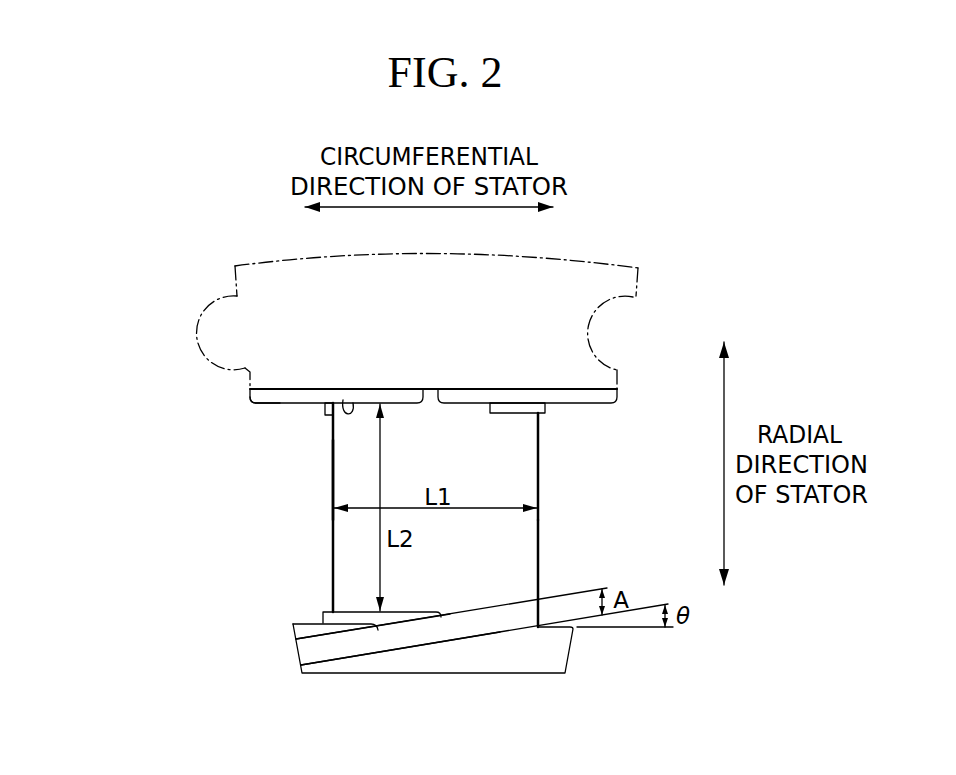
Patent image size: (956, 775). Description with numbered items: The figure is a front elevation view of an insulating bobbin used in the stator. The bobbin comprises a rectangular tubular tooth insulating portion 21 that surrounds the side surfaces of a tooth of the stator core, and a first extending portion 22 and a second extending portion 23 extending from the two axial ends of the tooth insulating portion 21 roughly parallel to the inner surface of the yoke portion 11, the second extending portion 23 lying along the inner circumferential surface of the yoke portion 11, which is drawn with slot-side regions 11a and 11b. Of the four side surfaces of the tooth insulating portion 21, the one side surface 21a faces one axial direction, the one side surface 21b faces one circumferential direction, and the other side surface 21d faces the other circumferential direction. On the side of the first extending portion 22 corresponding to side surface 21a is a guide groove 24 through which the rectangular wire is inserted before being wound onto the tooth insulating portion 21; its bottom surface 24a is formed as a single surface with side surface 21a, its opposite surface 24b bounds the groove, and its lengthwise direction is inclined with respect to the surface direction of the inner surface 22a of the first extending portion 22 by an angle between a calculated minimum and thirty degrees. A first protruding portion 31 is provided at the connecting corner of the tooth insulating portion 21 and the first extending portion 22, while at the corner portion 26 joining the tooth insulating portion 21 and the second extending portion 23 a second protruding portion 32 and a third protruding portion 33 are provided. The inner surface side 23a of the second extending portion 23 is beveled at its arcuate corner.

The yoke portion 11 is at (570, 260).
The slot of stator core 11a is at (203, 330).
The slot of stator core 11b is at (593, 320).
The tooth insulating portion 21 is at (332, 528).
The one side surface 21a is at (516, 478).
The one side surface 21b is at (540, 530).
The other side surface 21d is at (332, 483).
The first extending portion 22 is at (537, 673).
The inner surface 22a is at (307, 623).
The second extending portion 23 is at (417, 389).
The inner surface side 23a is at (270, 403).
The guide groove 24 is at (318, 648).
The bottom surface 24a is at (355, 645).
The lower surface of inclined plate 24b is at (418, 646).
The corner portion 26 is at (343, 400).
The first protruding portion 31 is at (363, 610).
The second protruding portion 32 is at (548, 408).
The third protruding portion 33 is at (322, 410).